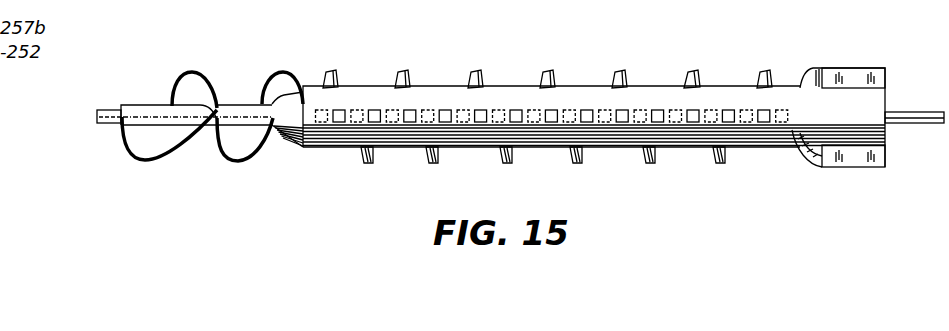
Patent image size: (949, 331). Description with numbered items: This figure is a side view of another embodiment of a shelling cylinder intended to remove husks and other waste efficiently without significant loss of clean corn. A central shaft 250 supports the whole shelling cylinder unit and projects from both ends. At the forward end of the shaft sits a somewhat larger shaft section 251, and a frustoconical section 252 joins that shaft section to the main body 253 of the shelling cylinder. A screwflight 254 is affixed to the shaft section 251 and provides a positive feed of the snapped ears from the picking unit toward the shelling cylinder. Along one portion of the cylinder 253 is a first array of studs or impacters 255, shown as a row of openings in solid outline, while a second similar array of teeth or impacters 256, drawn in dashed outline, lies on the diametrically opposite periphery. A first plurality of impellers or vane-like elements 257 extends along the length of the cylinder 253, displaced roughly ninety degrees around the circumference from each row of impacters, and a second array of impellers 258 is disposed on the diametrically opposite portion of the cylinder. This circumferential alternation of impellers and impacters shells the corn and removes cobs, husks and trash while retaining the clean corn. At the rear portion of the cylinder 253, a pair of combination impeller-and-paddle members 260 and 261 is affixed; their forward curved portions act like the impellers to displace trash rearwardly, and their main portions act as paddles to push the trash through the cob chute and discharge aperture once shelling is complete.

The central shaft 250 is at (110, 108).
The shaft section 251 is at (153, 116).
The frustoconical section 252 is at (296, 128).
The main body of the shelling cylinder 253 is at (433, 98).
The screwflight 254 is at (192, 73).
The studs or impacters 255 is at (445, 122).
The teeth or impacters 256 is at (678, 109).
The impellers or vane-like elements 257 is at (612, 74).
The impellers 258 is at (712, 158).
The combination impeller-and-paddle member 260 is at (847, 80).
The combination impeller-and-paddle member 261 is at (850, 155).